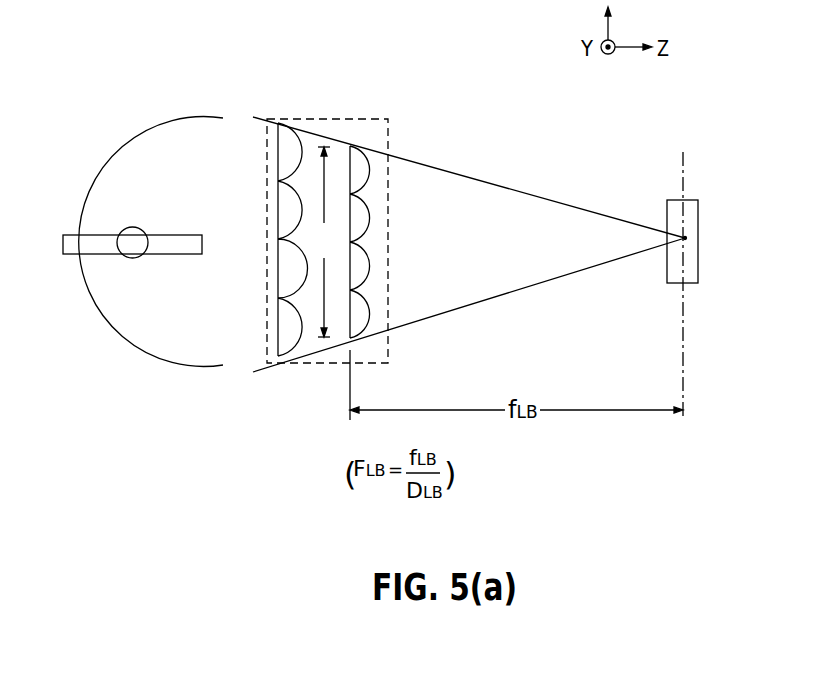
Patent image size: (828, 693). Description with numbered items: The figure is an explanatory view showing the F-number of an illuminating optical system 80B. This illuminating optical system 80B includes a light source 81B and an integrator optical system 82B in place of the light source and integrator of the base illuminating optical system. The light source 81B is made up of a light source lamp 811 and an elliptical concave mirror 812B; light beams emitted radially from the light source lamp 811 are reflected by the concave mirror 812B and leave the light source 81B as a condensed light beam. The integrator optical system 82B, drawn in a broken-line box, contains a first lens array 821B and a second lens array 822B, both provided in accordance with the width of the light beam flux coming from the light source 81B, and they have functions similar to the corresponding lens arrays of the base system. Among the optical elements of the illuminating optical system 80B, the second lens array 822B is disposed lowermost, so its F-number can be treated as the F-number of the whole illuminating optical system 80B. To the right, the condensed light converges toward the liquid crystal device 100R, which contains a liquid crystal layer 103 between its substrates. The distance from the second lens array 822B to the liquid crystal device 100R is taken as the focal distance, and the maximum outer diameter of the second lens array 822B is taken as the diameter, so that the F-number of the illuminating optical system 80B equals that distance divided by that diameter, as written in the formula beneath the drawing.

The illuminating optical system 80B is at (252, 82).
The light source 81B is at (82, 288).
The light source lamp 811 is at (132, 217).
The elliptical concave mirror 812B is at (156, 242).
The integrator optical system 82B is at (337, 115).
The first lens array 821B is at (305, 343).
The second lens array 822B is at (372, 317).
The liquid crystal device 100R is at (688, 200).
The liquid crystal layer 103 is at (687, 237).